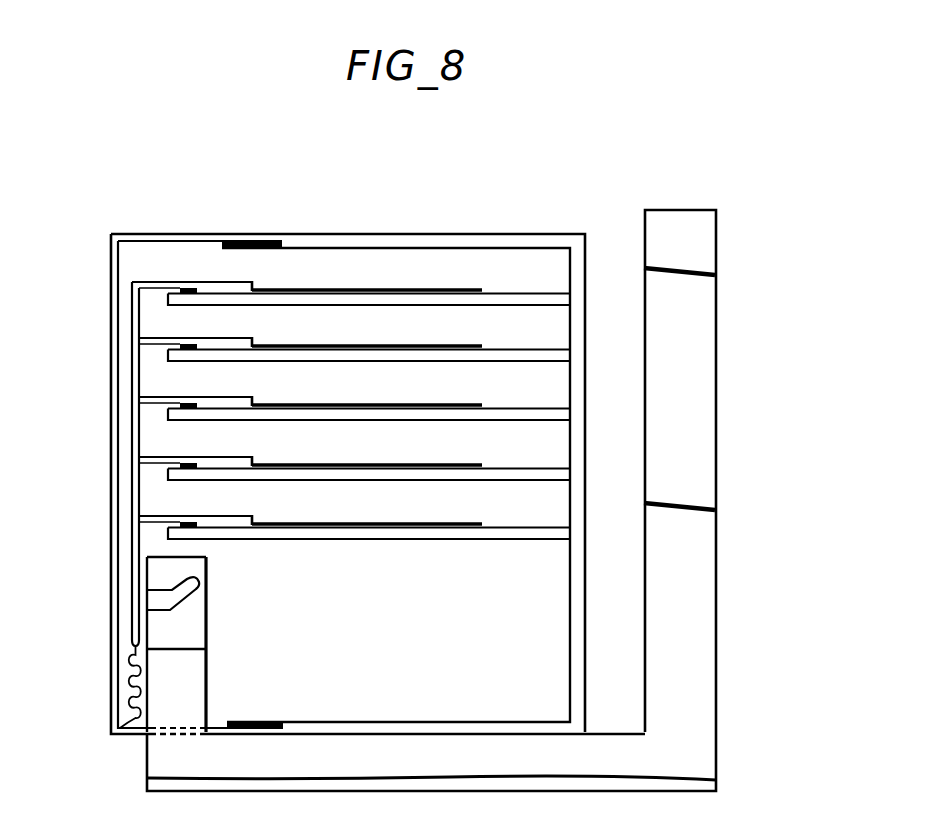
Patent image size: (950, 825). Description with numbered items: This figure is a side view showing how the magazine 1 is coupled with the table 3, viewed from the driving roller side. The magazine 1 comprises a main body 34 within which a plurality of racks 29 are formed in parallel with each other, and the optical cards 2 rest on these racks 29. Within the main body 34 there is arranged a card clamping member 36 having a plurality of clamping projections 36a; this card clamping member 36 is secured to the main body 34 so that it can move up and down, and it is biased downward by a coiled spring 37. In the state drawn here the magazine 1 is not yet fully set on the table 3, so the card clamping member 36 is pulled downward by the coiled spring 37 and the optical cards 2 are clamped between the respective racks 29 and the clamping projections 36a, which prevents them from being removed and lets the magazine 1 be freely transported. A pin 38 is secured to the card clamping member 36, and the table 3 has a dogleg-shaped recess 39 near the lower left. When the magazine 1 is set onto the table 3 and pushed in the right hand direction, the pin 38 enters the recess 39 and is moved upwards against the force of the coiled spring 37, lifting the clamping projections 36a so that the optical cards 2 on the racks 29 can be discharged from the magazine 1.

The magazine 1 is at (597, 389).
The optical card 2 is at (390, 288).
The table 3 is at (690, 669).
The rack 29 is at (437, 296).
The main body 34 is at (578, 307).
The card clamping member 36 is at (132, 335).
The clamping projection 36a is at (247, 337).
The coiled spring 37 is at (133, 678).
The pin 38 is at (142, 601).
The recess 39 is at (173, 591).